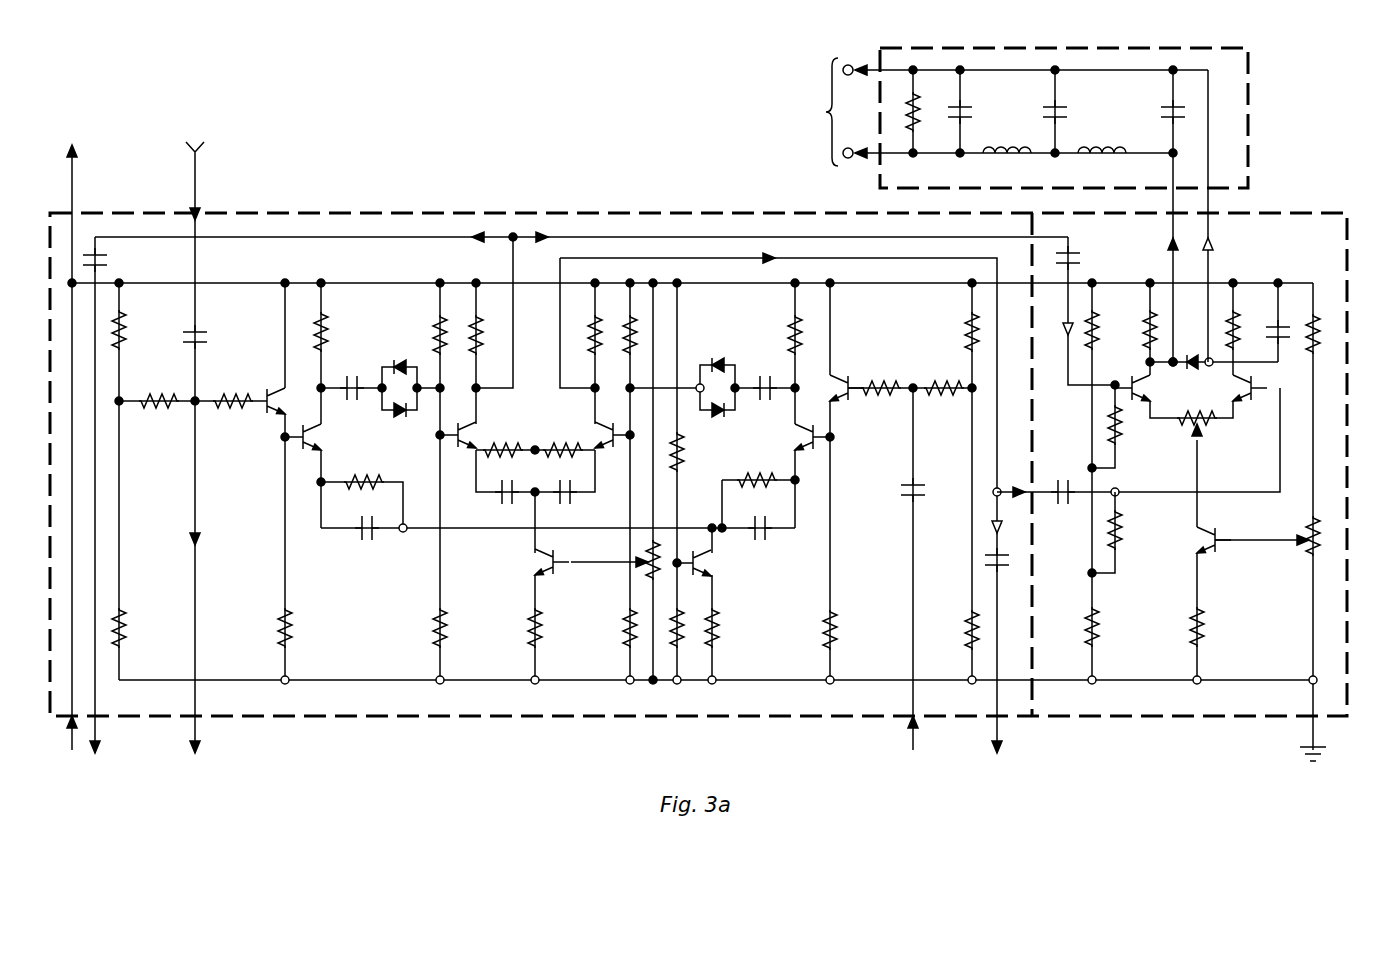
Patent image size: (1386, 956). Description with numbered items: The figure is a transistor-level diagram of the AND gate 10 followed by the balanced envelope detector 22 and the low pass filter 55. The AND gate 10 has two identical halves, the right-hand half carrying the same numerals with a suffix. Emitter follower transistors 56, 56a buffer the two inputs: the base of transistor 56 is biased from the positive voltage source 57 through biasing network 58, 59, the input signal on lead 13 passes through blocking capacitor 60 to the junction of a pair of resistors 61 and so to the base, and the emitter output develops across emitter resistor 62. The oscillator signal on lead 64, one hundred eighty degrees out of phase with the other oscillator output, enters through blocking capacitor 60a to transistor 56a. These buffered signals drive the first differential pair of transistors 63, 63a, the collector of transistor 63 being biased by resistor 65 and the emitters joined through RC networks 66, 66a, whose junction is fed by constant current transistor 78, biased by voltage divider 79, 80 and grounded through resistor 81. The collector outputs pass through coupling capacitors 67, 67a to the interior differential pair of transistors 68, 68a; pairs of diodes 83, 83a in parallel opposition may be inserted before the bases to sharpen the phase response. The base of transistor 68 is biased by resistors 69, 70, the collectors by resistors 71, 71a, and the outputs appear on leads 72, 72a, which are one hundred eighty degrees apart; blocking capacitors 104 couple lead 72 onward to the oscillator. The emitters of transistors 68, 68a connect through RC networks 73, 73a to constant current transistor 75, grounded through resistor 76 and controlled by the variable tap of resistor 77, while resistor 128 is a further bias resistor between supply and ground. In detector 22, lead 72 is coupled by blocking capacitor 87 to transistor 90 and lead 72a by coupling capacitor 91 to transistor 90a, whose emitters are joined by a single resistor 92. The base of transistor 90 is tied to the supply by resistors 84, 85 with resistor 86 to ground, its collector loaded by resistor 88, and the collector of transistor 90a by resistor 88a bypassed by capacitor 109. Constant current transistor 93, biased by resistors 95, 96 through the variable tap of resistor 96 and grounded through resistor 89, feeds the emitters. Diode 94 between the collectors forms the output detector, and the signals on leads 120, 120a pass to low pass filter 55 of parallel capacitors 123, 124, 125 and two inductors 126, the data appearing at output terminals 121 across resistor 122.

The AND gate 10 is at (374, 213).
The input lead 13 is at (197, 180).
The balanced detector 22 is at (1350, 226).
The low pass filter 55 is at (1066, 48).
The emitter follower transistor 56 is at (266, 394).
The emitter follower transistor 56a is at (850, 376).
The positive voltage source 57 is at (74, 180).
The biasing network resistor 58 is at (124, 328).
The biasing network resistor 59 is at (124, 626).
The blocking capacitor 60 is at (199, 330).
The blocking capacitor 60a is at (918, 488).
The pair of resistors 61 is at (157, 408).
The emitter resistor 62 is at (290, 626).
The transistor 63 is at (322, 432).
The transistor 63a is at (798, 436).
The oscillator lead 64 is at (912, 624).
The collector bias resistor 65 is at (324, 318).
The RC network 66 is at (382, 528).
The RC network 66a is at (786, 523).
The coupling capacitor 67 is at (356, 380).
The coupling capacitor 67a is at (762, 378).
The transistor 68 is at (465, 433).
The transistor 68a is at (594, 426).
The base bias resistor 69 is at (434, 322).
The base bias resistor 70 is at (432, 626).
The collector bias resistor 71 is at (480, 328).
The collector bias resistor 71a is at (585, 328).
The output lead 72 is at (509, 262).
The output lead 72a is at (580, 258).
The RC network 73 is at (476, 474).
The RC network 73a is at (592, 476).
The constant current source transistor 75 is at (553, 572).
The emitter resistor 76 is at (528, 626).
The variable tap resistor 77 is at (644, 549).
The constant current source transistor 78 is at (706, 568).
The voltage divider resistor 79 is at (682, 450).
The voltage divider resistor 80 is at (683, 630).
The emitter resistor 81 is at (717, 626).
The pair of diodes 83 is at (398, 412).
The pair of diodes 83a is at (708, 382).
The resistor 84 is at (1102, 316).
The resistor 85 is at (1120, 440).
The resistor 86 is at (1097, 626).
The blocking capacitor 87 is at (1072, 262).
The collector resistor 88 is at (1148, 328).
The collector resistor 88a is at (1258, 300).
The emitter resistor 89 is at (1202, 626).
The transistor 90 is at (1118, 376).
The transistor 90a is at (1248, 394).
The coupling capacitor 91 is at (1053, 498).
The emitter resistor 92 is at (1204, 424).
The constant current source transistor 93 is at (1218, 545).
The diode 94 is at (1188, 354).
The bias resistor 95 is at (1316, 324).
The variable tap resistor 96 is at (1306, 554).
The blocking capacitors 104 is at (99, 258).
The bypass capacitor 109 is at (1284, 340).
The output lead 120 is at (1167, 236).
The output lead 120a is at (1212, 236).
The output terminals 121 is at (848, 65).
The resistor 122 is at (936, 94).
The capacitor 123 is at (1170, 102).
The capacitor 124 is at (1061, 106).
The capacitor 125 is at (966, 106).
The inductors 126 is at (1092, 158).
The bias resistor 128 is at (622, 626).